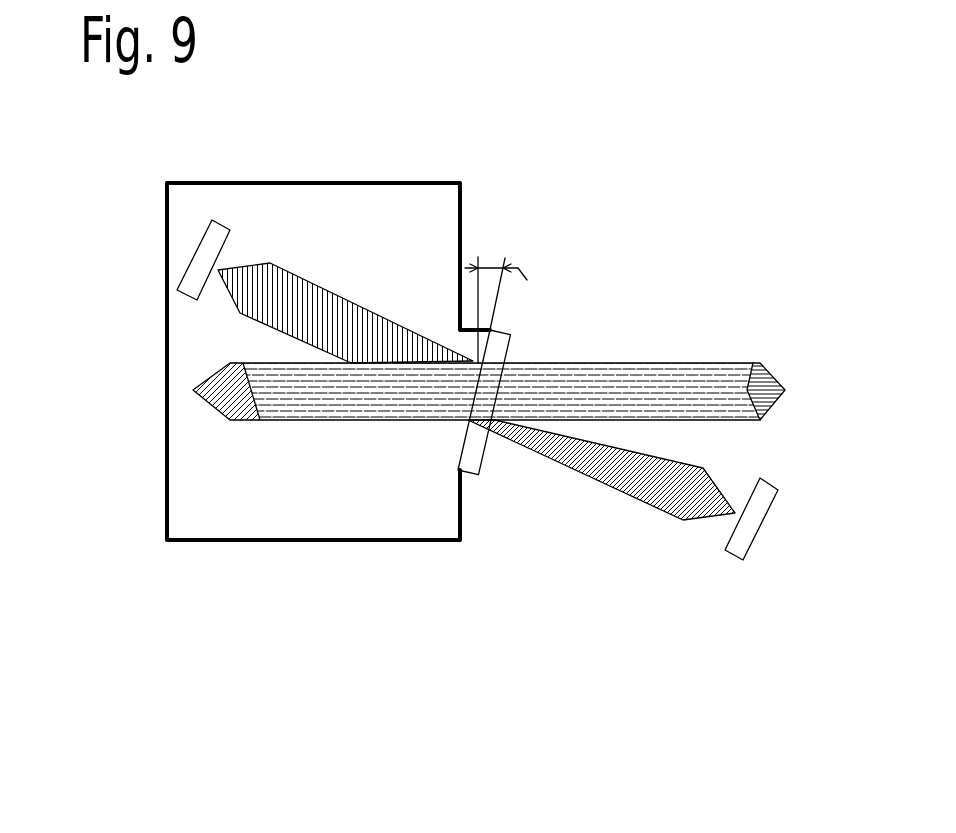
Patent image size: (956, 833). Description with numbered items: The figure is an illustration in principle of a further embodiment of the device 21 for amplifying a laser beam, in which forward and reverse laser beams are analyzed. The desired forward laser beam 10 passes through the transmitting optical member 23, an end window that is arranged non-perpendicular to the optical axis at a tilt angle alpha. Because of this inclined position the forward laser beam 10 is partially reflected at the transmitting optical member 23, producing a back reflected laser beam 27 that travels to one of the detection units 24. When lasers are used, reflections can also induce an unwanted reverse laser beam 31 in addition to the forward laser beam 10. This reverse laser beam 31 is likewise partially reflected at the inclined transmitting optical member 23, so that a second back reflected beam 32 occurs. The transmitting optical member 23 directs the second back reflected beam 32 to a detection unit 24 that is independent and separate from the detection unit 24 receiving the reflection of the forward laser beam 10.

The laser beam 10 is at (770, 408).
The device 21 is at (513, 197).
The transmitting optical member 23 is at (478, 473).
The detection unit 24 is at (190, 287).
The back reflected laser beam 27 is at (327, 303).
The reverse laser beam 31 is at (215, 405).
The second back reflected beam 32 is at (620, 467).